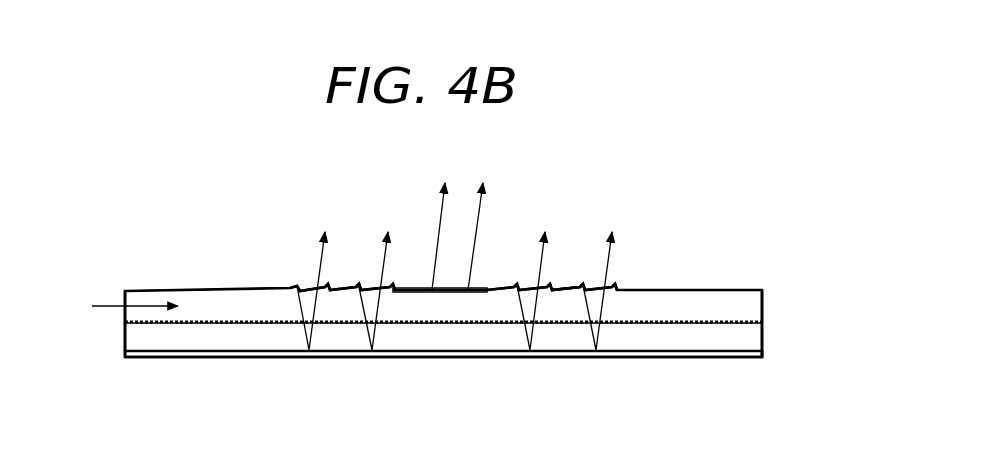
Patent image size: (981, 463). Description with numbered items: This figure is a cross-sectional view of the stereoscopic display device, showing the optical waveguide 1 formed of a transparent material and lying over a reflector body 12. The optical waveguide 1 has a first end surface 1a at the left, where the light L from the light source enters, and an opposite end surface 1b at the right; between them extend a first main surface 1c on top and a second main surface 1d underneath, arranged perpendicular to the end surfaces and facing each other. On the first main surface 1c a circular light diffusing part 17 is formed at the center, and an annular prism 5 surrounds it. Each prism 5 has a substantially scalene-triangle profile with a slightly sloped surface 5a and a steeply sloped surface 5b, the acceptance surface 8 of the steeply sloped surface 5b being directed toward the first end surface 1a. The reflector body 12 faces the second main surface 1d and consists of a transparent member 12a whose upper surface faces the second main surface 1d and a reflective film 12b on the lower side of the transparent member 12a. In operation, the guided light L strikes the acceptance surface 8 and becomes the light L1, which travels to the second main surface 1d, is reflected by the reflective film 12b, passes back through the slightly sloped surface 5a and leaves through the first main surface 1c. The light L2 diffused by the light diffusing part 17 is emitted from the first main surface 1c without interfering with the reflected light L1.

The optical waveguide 1 is at (752, 312).
The first end surface 1a is at (125, 316).
The second end surface 1b is at (765, 293).
The first main surface 1c is at (180, 292).
The second main surface 1d is at (200, 324).
The prism 5 is at (243, 283).
The slightly sloped surface 5a is at (568, 283).
The steeply sloped surface 5b is at (617, 289).
The acceptance surface 8 is at (358, 288).
The reflector body 12 is at (875, 312).
The transparent member 12a is at (748, 338).
The reflective film 12b is at (763, 357).
The light diffusing part 17 is at (412, 287).
The light L is at (112, 307).
The light L1 is at (320, 265).
The light L2 is at (477, 228).